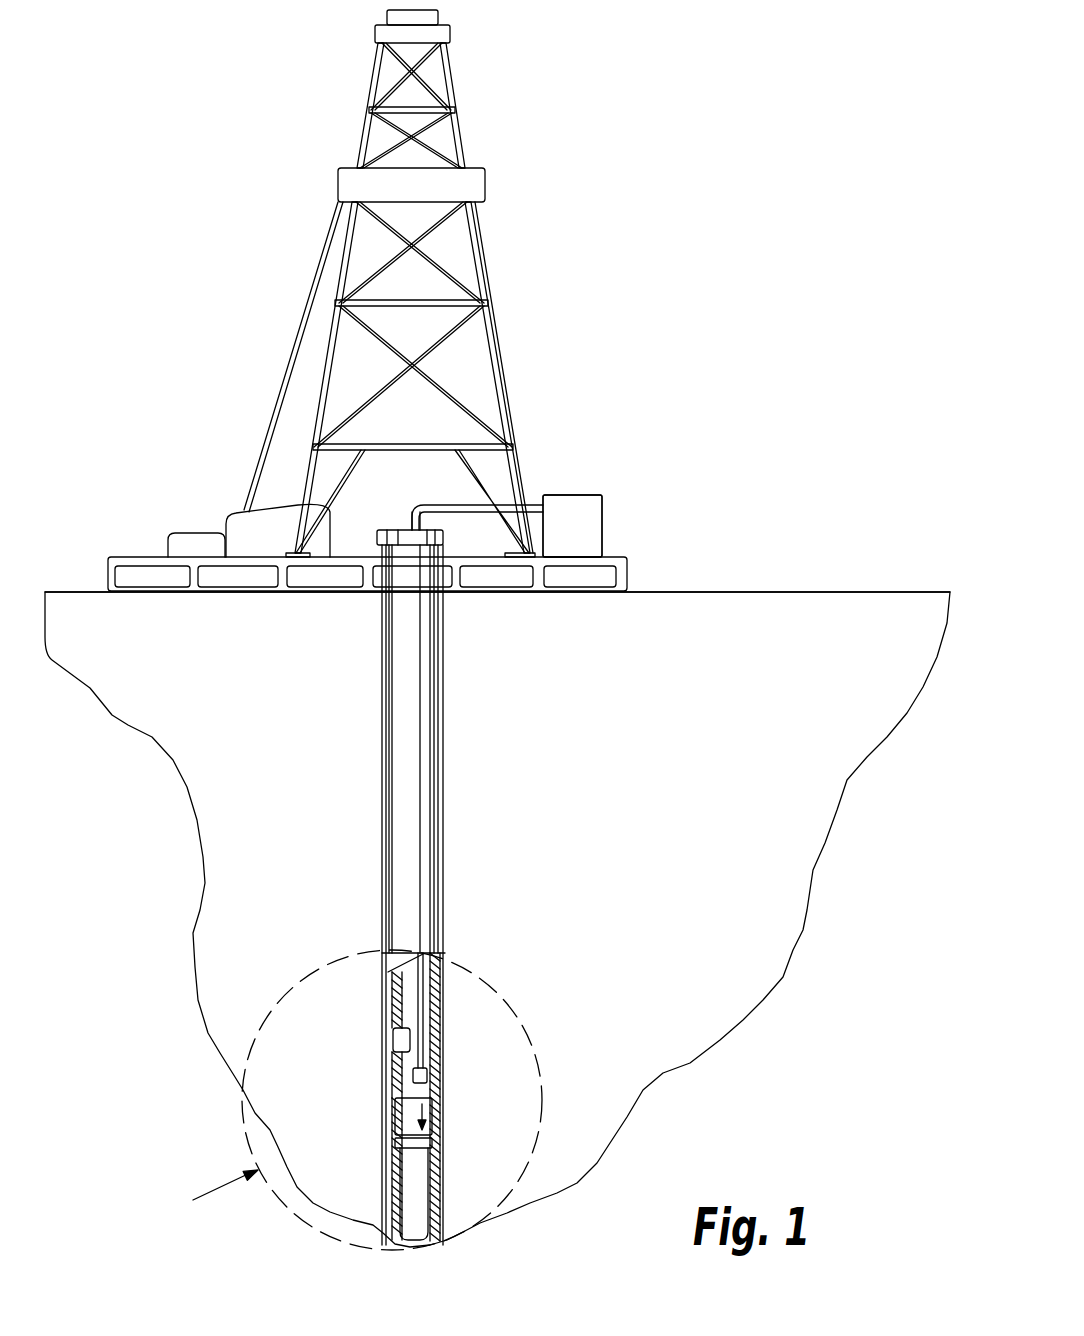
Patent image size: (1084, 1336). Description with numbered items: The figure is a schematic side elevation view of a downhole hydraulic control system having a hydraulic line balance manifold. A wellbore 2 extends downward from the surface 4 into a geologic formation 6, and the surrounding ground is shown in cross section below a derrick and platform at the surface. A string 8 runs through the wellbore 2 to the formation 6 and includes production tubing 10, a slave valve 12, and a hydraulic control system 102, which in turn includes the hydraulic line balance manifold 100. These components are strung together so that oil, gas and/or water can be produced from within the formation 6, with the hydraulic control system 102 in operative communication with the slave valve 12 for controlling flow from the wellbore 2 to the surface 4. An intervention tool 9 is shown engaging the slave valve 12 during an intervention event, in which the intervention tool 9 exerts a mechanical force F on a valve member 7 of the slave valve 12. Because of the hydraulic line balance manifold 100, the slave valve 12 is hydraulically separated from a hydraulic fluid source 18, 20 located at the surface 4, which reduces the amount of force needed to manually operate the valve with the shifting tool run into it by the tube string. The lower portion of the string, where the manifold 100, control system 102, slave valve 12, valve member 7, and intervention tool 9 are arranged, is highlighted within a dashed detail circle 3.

The wellbore 2 is at (390, 733).
The downhole detail region 3 is at (353, 1100).
The surface 4 is at (735, 592).
The geologic formation 6 is at (628, 903).
The valve member 7 is at (388, 1150).
The string 8 is at (418, 806).
The intervention tool 9 is at (432, 1084).
The production tubing 10 is at (432, 1188).
The slave valve 12 is at (394, 1110).
The hydraulic fluid source 18 is at (603, 520).
The hydraulic fluid source 20 is at (572, 526).
The hydraulic line balance manifold 100 is at (388, 1043).
The hydraulic control system 102 is at (388, 1076).
The mechanical force F is at (433, 1113).